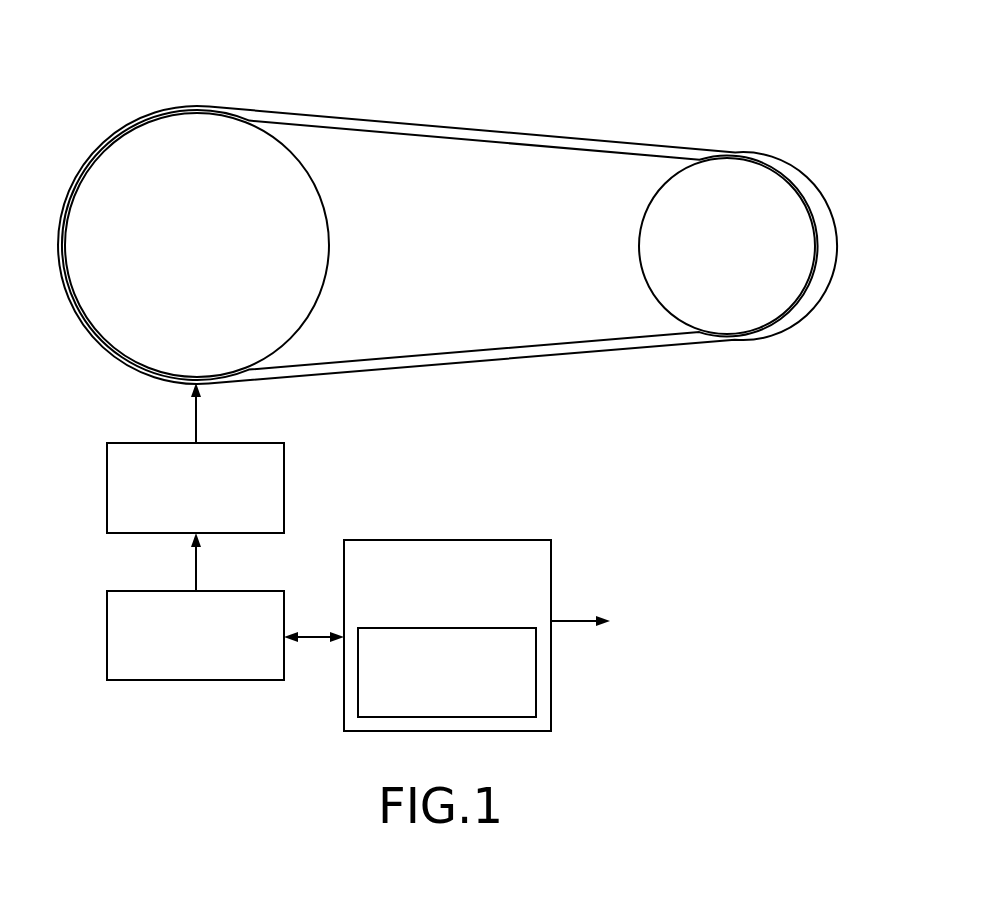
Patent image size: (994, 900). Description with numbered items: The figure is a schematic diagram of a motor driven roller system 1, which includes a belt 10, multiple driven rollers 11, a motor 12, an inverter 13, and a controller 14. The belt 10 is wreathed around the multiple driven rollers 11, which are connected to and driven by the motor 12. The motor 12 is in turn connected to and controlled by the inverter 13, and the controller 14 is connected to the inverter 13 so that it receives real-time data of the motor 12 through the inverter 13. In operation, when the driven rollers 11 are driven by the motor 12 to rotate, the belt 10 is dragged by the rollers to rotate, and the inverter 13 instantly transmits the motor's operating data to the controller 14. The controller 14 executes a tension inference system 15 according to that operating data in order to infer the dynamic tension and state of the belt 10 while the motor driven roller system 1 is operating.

The motor driven roller system 1 is at (447, 24).
The belt 10 is at (333, 123).
The driven rollers 11 is at (140, 165).
The motor 12 is at (207, 452).
The inverter 13 is at (207, 600).
The controller 14 is at (447, 547).
The tension inference system 15 is at (530, 658).